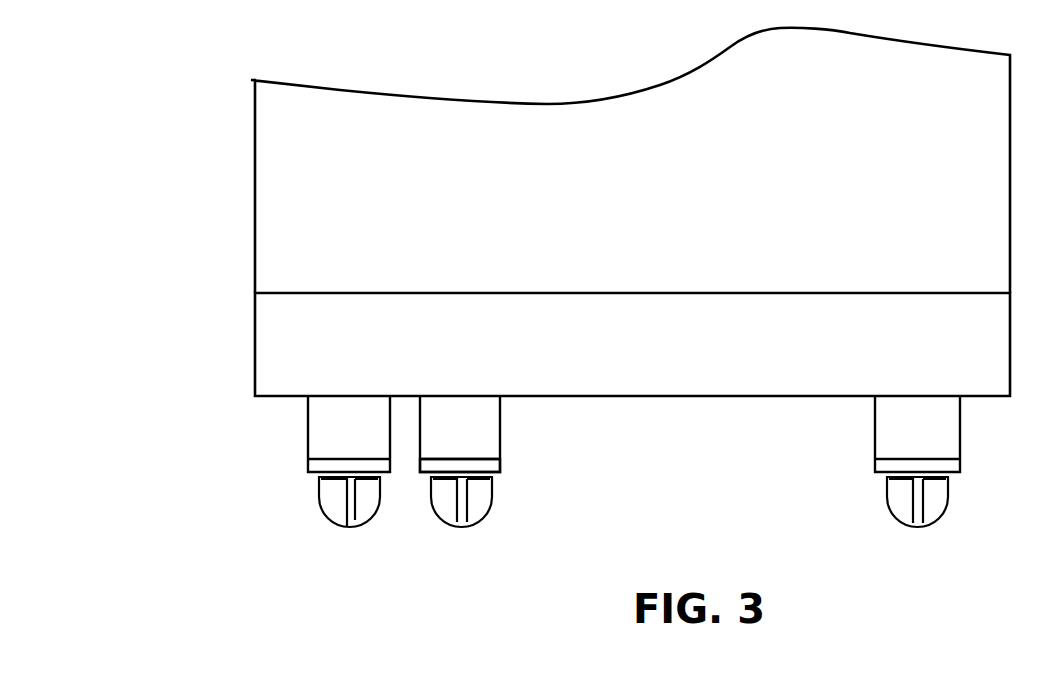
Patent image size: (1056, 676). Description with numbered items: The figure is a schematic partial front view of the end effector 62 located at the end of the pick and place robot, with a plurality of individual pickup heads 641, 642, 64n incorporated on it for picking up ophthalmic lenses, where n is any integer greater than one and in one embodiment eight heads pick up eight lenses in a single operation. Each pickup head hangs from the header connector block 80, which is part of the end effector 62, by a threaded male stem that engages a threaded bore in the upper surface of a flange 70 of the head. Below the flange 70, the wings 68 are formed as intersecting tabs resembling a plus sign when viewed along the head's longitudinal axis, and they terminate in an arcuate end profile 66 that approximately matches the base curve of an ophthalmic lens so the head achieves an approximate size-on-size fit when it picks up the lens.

The end effector 62 is at (613, 90).
The header connector block 80 is at (254, 345).
The first pickup head 641 is at (307, 434).
The second pickup head 642 is at (502, 436).
The nth pickup head 64n is at (875, 432).
The arcuate end profile 66 is at (338, 528).
The wings 68 is at (437, 515).
The flange 70 is at (502, 464).